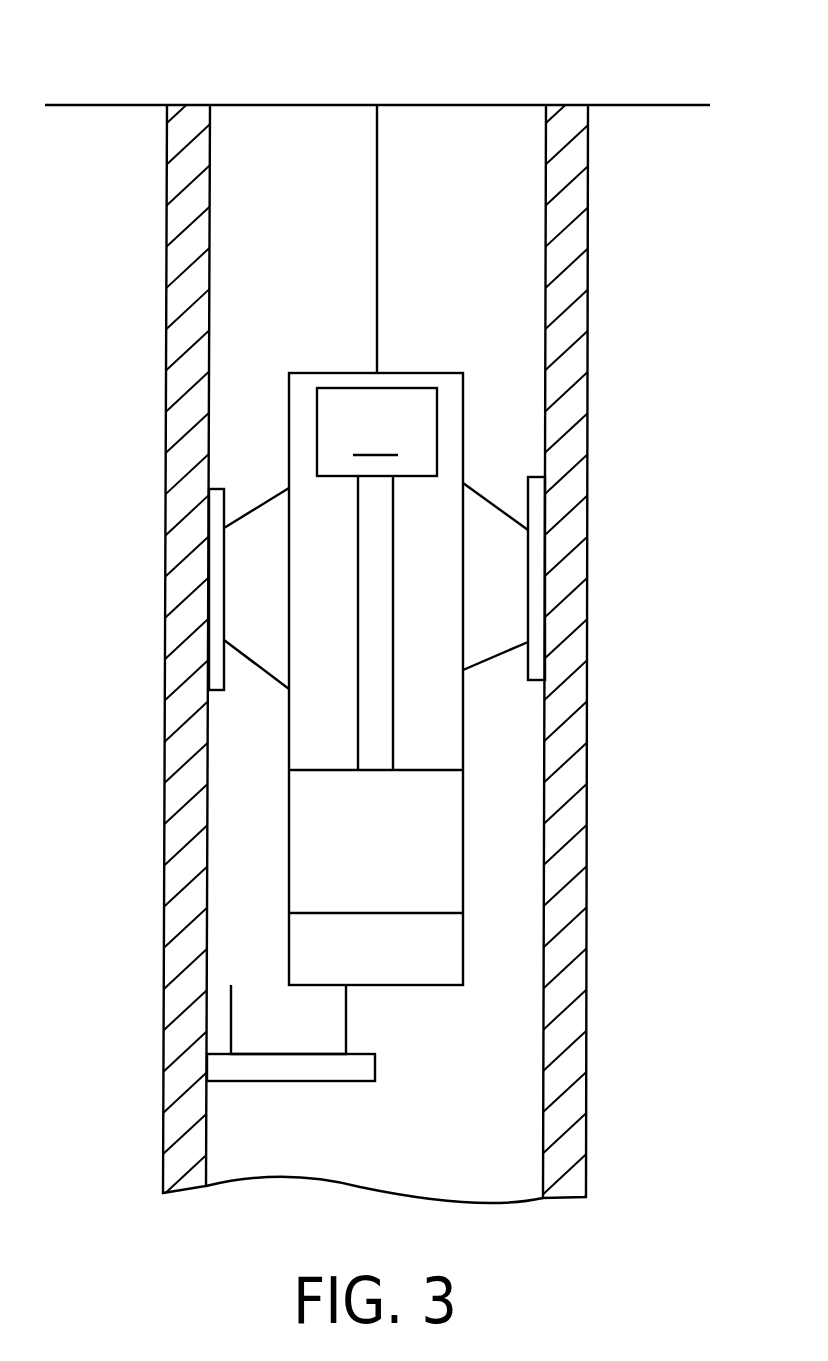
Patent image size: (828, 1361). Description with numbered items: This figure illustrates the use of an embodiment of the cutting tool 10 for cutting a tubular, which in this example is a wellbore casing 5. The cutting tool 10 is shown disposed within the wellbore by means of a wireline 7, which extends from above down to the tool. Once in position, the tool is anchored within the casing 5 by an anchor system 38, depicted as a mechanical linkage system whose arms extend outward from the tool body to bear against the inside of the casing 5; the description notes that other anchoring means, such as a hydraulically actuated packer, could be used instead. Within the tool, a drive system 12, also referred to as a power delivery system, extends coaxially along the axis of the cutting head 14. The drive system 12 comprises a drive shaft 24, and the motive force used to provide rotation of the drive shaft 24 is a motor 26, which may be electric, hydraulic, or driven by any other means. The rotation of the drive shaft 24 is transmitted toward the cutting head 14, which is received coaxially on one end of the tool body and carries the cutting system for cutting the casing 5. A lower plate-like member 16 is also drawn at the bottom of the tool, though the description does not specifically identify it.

The wellbore casing 5 is at (560, 1135).
The wireline 7 is at (379, 140).
The cutting tool 10 is at (265, 498).
The drive system 12 is at (420, 715).
The cutting head 14 is at (463, 947).
The bottom plate 16 is at (227, 1068).
The drive shaft 24 is at (358, 738).
The motor 26 is at (377, 432).
The anchor system 38 is at (488, 500).